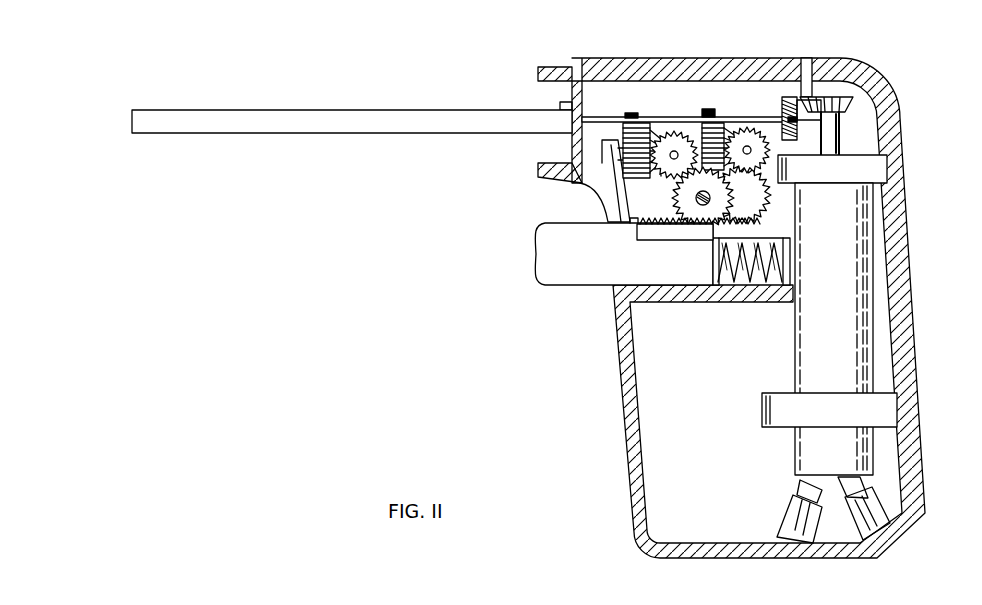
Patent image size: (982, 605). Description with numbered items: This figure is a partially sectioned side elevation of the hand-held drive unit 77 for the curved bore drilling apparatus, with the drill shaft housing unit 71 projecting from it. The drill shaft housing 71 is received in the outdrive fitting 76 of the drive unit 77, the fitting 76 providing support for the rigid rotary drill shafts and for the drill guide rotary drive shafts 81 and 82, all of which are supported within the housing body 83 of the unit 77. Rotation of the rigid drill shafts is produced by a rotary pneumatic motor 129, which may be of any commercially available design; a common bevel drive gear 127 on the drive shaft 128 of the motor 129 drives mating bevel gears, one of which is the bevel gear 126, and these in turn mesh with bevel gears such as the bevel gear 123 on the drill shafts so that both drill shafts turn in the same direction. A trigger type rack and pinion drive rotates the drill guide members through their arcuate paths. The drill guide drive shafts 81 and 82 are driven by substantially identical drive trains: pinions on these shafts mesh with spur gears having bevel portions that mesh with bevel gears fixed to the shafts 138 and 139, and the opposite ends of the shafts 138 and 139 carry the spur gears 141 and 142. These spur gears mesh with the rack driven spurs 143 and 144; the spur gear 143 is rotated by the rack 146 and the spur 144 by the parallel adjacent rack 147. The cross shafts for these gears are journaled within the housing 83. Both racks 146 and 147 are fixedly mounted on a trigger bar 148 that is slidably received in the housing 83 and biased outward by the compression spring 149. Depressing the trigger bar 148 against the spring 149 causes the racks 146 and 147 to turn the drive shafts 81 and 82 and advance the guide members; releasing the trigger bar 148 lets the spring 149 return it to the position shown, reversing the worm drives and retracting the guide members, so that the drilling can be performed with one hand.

The drill shaft housing unit 71 is at (313, 101).
The outdrive fitting 76 is at (575, 172).
The hand-held drive unit 77 is at (968, 128).
The drill guide rotary drive shaft 81 is at (690, 118).
The drill guide rotary drive shaft 82 is at (580, 152).
The housing body 83 is at (908, 328).
The bevel gear 123 is at (803, 85).
The mating bevel gear 126 is at (798, 97).
The common bevel drive gear 127 is at (845, 95).
The drive shaft 128 is at (848, 124).
The rotary pneumatic motor 129 is at (833, 356).
The shaft 138 is at (674, 160).
The shaft 139 is at (750, 145).
The spur gear 141 is at (648, 123).
The spur gear 142 is at (772, 156).
The rack driven spur 143 is at (692, 232).
The rack driven spur 144 is at (712, 239).
The rack 146 is at (636, 228).
The rack 147 is at (752, 223).
The trigger bar 148 is at (578, 287).
The compression spring 149 is at (760, 288).